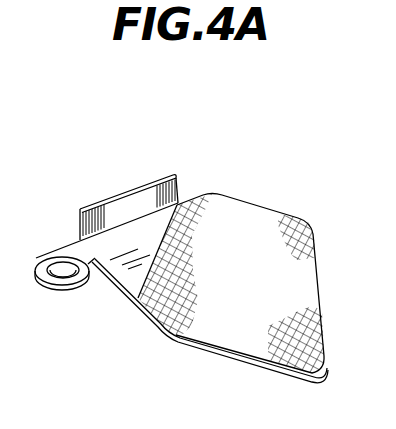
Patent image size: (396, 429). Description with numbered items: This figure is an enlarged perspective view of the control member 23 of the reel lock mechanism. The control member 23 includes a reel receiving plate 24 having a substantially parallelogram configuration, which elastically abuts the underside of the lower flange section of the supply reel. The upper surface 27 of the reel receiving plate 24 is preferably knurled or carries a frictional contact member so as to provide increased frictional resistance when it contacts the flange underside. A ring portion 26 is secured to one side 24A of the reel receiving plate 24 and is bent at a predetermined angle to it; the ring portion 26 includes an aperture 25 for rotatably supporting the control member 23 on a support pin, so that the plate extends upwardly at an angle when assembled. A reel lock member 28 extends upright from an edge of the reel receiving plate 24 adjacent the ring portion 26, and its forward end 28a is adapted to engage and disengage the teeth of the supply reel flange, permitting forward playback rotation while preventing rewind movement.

The control member 23 is at (137, 171).
The reel receiving plate 24 is at (242, 232).
The one side of reel receiving member 24A is at (137, 305).
The aperture 25 is at (63, 273).
The ring portion 26 is at (50, 263).
The upper surface 27 is at (295, 278).
The reel lock member 28 is at (110, 220).
The forward end of reel lock member 28a is at (180, 190).